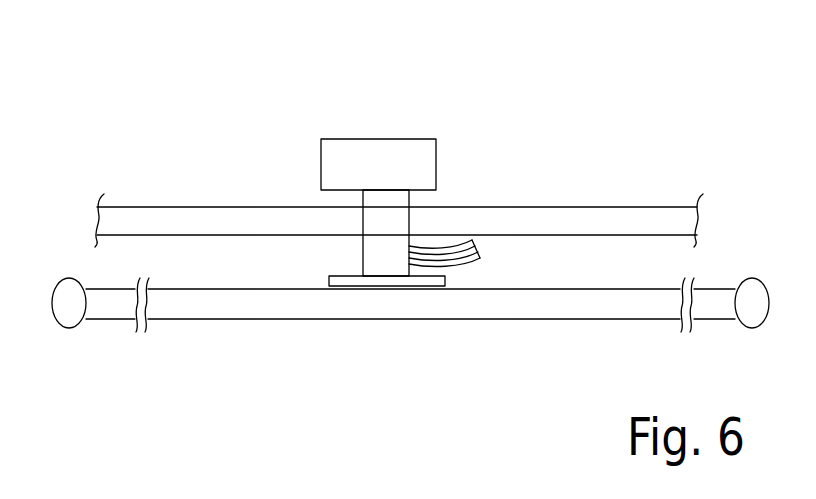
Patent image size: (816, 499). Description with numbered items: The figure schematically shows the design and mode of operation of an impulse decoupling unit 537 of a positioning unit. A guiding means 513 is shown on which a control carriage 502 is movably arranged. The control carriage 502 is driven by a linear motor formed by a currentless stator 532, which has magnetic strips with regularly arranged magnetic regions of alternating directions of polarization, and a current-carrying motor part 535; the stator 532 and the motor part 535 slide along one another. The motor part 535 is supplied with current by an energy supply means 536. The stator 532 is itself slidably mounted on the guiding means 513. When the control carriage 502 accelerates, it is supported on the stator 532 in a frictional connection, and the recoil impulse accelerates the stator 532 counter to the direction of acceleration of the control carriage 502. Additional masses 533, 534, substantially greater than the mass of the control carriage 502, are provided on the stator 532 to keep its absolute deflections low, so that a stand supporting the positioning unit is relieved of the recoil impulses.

The impulse decoupling unit 537 is at (623, 111).
The guiding means 513 is at (632, 206).
The control carriage 502 is at (422, 157).
The current-carrying motor part 535 is at (385, 264).
The energy supply means 536 is at (460, 247).
The stator 532 is at (558, 305).
The additional mass 534 is at (69, 313).
The additional mass 533 is at (752, 313).